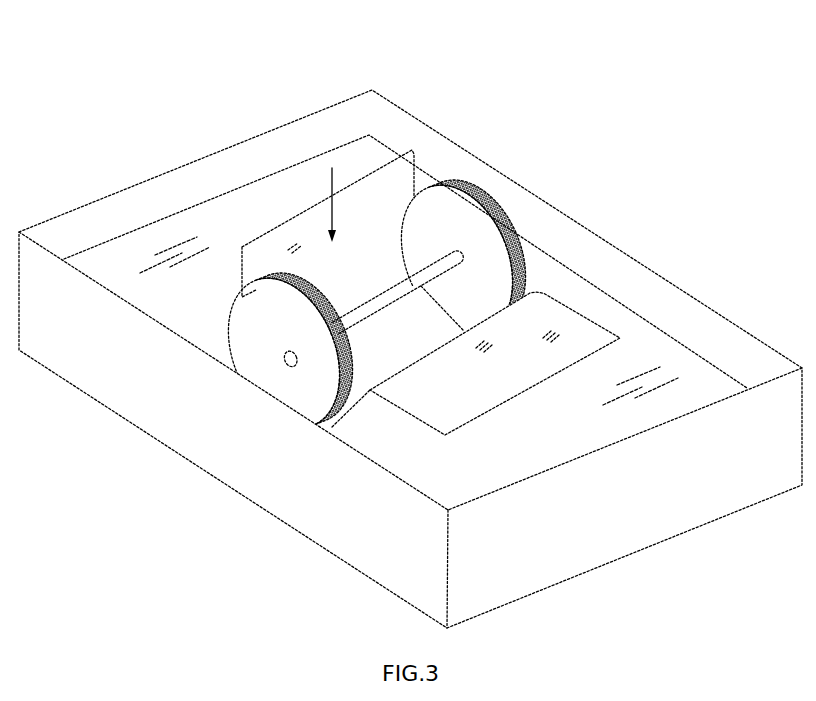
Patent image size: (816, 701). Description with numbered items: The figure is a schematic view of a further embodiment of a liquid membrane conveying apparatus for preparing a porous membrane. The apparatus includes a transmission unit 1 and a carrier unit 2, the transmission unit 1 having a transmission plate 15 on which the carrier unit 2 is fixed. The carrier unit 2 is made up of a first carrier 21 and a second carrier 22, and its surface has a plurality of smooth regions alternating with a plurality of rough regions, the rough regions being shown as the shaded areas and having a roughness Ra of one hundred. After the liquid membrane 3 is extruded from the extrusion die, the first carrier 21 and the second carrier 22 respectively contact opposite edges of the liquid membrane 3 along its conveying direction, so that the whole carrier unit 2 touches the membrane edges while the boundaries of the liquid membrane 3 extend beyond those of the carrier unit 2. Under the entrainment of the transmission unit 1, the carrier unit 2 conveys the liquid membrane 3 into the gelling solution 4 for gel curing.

The transmission unit 1 is at (353, 292).
The carrier unit 2 is at (459, 55).
The first carrier 21 is at (292, 280).
The second carrier 22 is at (462, 182).
The transmission plate 15 is at (477, 233).
The liquid membrane 3 is at (307, 208).
The gelling solution 4 is at (652, 363).